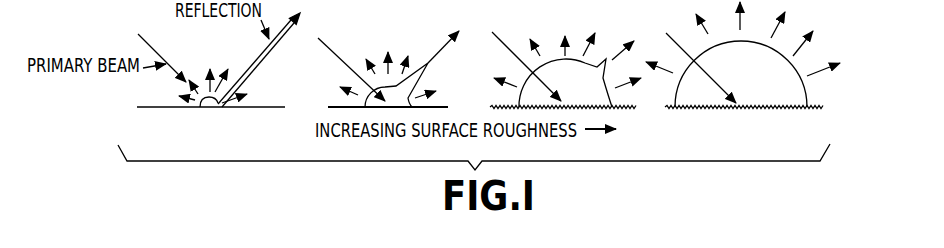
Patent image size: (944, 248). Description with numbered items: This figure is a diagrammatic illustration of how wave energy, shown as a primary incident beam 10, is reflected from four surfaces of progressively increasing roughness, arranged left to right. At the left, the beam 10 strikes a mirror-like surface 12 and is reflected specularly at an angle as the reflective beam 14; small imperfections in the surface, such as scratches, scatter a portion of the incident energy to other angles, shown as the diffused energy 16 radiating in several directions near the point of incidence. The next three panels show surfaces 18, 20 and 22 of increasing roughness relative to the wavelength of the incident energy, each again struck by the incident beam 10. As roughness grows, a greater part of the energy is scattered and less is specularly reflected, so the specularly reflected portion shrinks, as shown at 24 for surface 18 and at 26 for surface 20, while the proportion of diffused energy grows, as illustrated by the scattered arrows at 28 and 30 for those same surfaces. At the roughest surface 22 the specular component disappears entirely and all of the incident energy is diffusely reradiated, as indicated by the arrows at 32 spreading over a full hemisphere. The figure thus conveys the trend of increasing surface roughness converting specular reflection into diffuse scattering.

The primary incident beam 10 is at (151, 44).
The surface 12 is at (180, 108).
The reflective beam 14 is at (256, 61).
The diffused energy 16 is at (203, 50).
The surface 18 is at (336, 106).
The surface 20 is at (503, 106).
The surface 22 is at (809, 105).
The specularly reflected portion 24 is at (426, 62).
The specularly reflected portion 26 is at (606, 58).
The diffused energy 28 is at (396, 85).
The diffused energy 30 is at (573, 55).
The diffused energy 32 is at (755, 40).